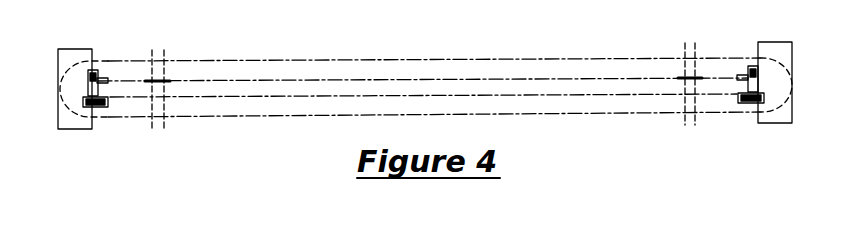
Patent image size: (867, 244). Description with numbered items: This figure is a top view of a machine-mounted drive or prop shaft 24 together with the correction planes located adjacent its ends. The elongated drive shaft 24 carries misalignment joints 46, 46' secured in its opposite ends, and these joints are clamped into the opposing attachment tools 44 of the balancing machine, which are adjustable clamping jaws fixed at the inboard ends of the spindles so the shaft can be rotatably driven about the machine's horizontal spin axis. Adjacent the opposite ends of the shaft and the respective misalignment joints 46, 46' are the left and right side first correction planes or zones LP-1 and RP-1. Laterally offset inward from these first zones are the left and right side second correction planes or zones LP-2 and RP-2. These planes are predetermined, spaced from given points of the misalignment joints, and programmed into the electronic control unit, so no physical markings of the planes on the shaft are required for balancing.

The drive or prop shaft 24 is at (312, 99).
The attachment tool 44 is at (73, 129).
The misalignment joint 46 is at (103, 68).
The misalignment joint 46' is at (745, 65).
The left side first correction plane LP-1 is at (152, 51).
The left side second correction plane LP-2 is at (164, 51).
The right side first correction plane RP-1 is at (695, 44).
The right side second correction plane RP-2 is at (685, 46).